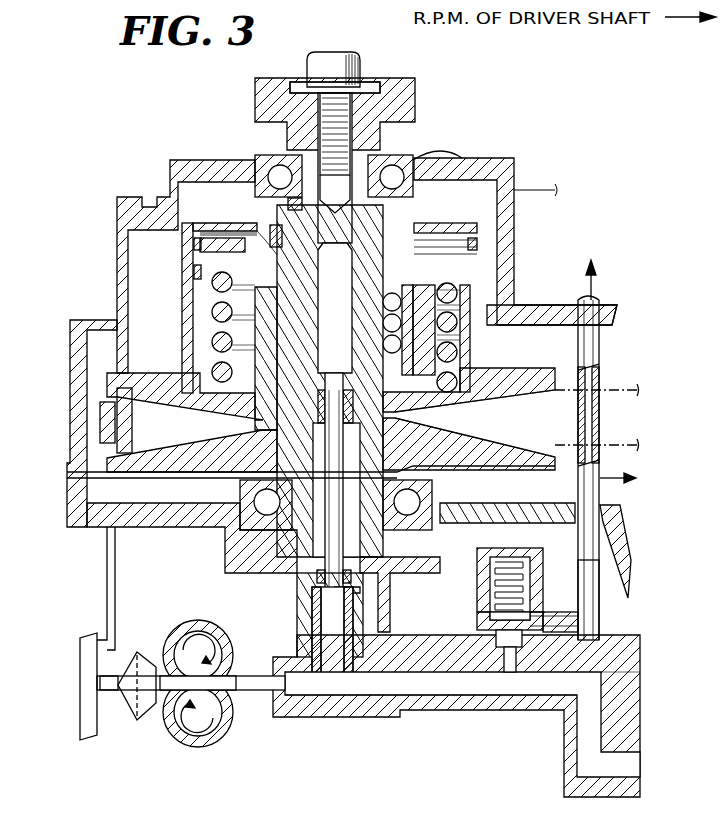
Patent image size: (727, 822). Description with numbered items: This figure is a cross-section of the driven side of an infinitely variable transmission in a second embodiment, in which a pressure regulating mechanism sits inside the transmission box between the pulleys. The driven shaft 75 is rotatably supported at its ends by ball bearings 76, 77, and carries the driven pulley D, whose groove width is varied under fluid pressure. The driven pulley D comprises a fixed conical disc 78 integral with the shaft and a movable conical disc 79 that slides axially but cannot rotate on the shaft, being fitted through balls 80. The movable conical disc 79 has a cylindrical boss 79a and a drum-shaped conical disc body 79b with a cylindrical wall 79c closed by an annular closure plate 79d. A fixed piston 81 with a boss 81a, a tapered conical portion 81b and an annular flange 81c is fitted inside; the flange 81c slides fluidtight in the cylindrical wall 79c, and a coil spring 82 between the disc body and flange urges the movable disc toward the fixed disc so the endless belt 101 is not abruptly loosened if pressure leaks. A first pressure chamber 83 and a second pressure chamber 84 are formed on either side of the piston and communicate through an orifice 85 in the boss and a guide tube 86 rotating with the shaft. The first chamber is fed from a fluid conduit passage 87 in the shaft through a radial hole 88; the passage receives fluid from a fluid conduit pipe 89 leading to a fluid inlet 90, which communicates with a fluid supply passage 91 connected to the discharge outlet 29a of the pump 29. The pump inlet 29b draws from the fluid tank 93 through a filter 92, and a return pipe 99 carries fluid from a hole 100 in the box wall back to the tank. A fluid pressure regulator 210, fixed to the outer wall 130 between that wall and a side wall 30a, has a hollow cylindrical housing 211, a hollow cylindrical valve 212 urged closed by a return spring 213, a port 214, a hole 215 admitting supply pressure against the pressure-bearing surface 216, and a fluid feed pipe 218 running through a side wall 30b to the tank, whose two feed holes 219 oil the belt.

The pump 29 is at (222, 710).
The discharge outlet 29a is at (240, 695).
The inlet 29b is at (172, 690).
The side wall 30a is at (562, 505).
The side wall 30b is at (549, 323).
The driven shaft 75 is at (367, 535).
The ball bearing 76 is at (398, 150).
The ball bearing 77 is at (438, 522).
The fixed conical disc 78 is at (490, 460).
The movable conical disc 79 is at (508, 380).
The cylindrical boss 79a is at (182, 327).
The conical disc body 79b is at (136, 390).
The cylindrical wall 79c is at (182, 300).
The annular closure plate 79d is at (214, 240).
The balls 80 is at (470, 285).
The fixed piston 81 is at (192, 265).
The boss 81a is at (285, 225).
The tapered conical portion 81b is at (283, 255).
The annular flange 81c is at (195, 232).
The coil spring 82 is at (445, 385).
The first pressure chamber 83 is at (465, 355).
The second pressure chamber 84 is at (443, 238).
The orifice 85 is at (298, 197).
The guide tube 86 is at (420, 200).
The fluid conduit passage 87 is at (325, 300).
The hole 88 is at (480, 245).
The fluid conduit pipe 89 is at (330, 530).
The fluid inlet 90 is at (335, 655).
The fluid supply passage 91 is at (447, 690).
The filter 92 is at (128, 720).
The fluid tank 93 is at (88, 668).
The return pipe 99 is at (107, 608).
The hole 100 is at (110, 530).
The endless belt 101 is at (102, 420).
The outer wall 130 is at (417, 700).
The fluid pressure regulator 210 is at (556, 576).
The hollow cylindrical housing 211 is at (522, 560).
The hollow cylindrical valve 212 is at (495, 592).
The return spring 213 is at (495, 605).
The port 214 is at (580, 652).
The hole 215 is at (510, 672).
The pressure-bearing surface 216 is at (485, 648).
The fluid feed pipe 218 is at (592, 600).
The feed holes 219 is at (598, 420).
The driven pulley D is at (90, 391).